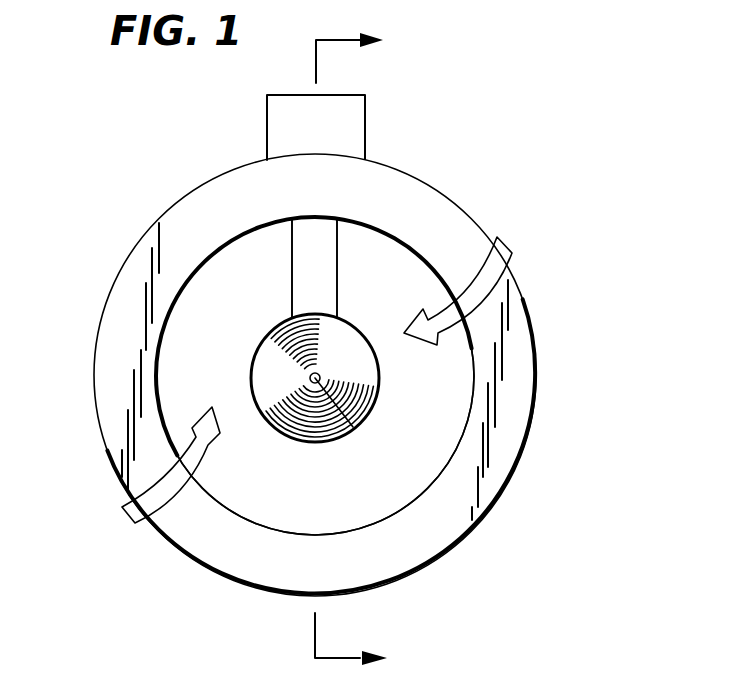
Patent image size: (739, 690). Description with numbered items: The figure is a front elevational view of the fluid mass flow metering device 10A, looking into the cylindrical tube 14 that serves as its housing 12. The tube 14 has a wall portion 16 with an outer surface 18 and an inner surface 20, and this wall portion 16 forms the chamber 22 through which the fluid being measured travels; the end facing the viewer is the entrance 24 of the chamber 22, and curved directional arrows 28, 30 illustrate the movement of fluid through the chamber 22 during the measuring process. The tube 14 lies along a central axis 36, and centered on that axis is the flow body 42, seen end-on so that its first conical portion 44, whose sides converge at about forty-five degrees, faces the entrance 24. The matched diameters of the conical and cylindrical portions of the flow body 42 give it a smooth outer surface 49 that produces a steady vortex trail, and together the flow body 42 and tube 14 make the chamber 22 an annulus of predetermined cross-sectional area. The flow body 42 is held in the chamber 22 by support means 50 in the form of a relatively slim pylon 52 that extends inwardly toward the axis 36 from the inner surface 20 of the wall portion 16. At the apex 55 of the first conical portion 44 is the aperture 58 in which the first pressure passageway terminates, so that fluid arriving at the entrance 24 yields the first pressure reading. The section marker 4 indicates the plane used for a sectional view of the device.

The rotary engine assembly 10A is at (556, 370).
The housing 12 is at (85, 470).
The housing wall 14 is at (505, 448).
The outer wall 16 is at (125, 287).
The outer surface 18 is at (170, 208).
The inner wall 20 is at (165, 322).
The inner surface 22 is at (407, 257).
The chamber 24 is at (450, 395).
The rotation direction arrow 28 is at (132, 523).
The flow direction arrow 30 is at (512, 250).
The vane 36 is at (315, 378).
The rotor 42 is at (395, 378).
The rotor surface 44 is at (275, 347).
The seal 49 is at (250, 383).
The inlet port 50 is at (352, 257).
The inlet 52 is at (325, 240).
The shaft 55 is at (315, 378).
The vane slot 58 is at (353, 427).
The section line 4- 4 is at (363, 352).